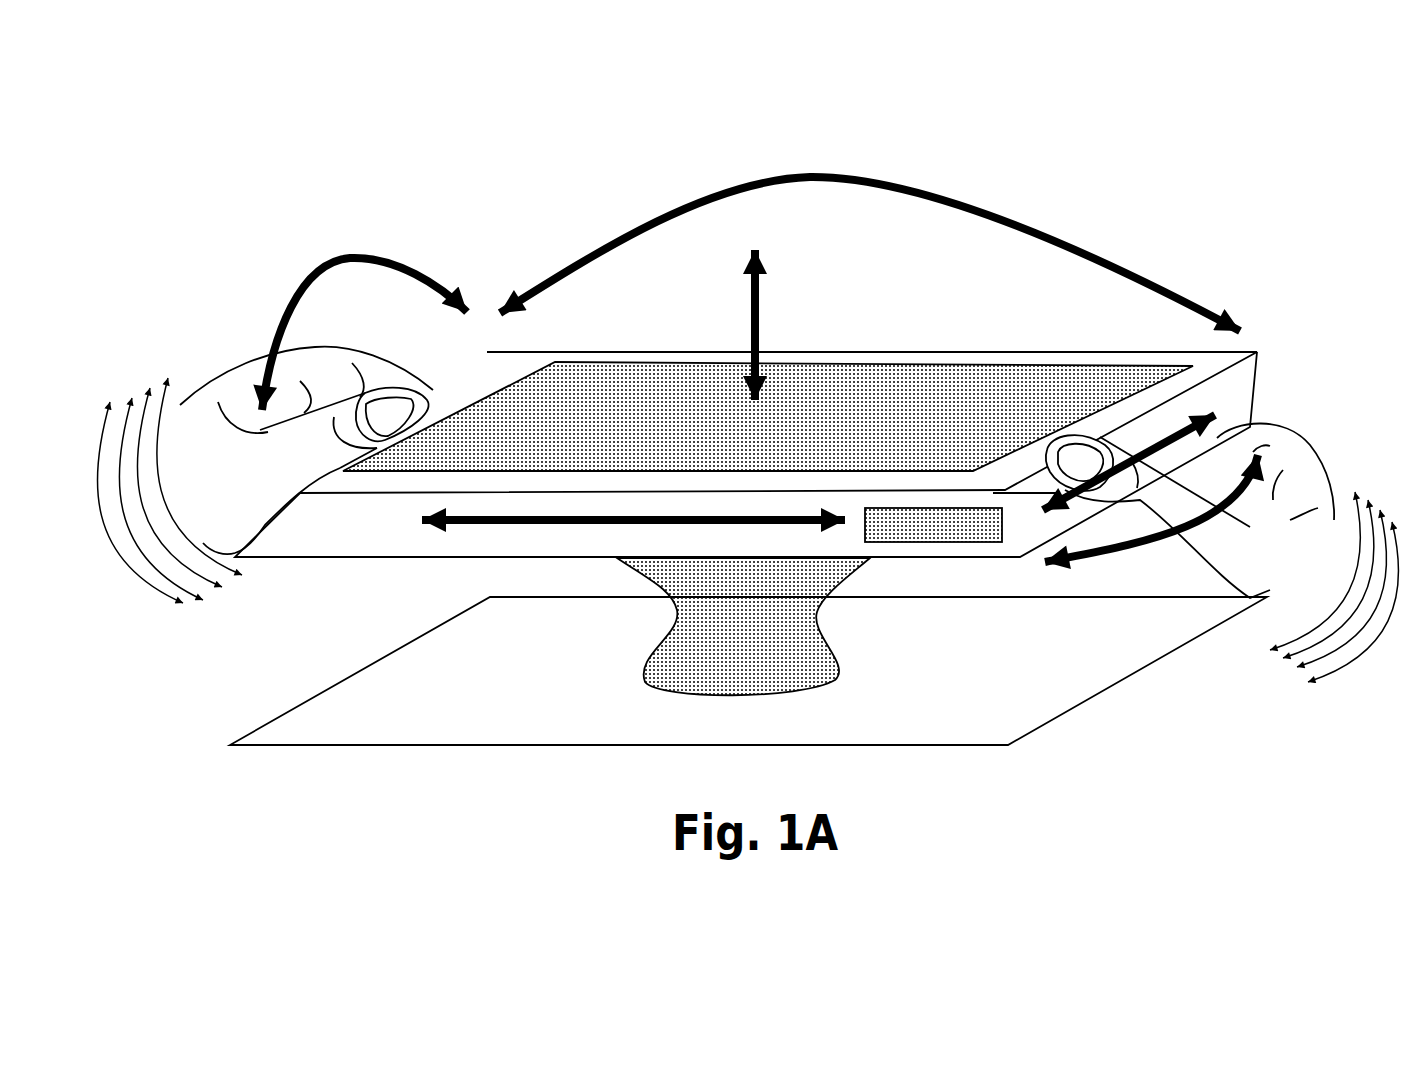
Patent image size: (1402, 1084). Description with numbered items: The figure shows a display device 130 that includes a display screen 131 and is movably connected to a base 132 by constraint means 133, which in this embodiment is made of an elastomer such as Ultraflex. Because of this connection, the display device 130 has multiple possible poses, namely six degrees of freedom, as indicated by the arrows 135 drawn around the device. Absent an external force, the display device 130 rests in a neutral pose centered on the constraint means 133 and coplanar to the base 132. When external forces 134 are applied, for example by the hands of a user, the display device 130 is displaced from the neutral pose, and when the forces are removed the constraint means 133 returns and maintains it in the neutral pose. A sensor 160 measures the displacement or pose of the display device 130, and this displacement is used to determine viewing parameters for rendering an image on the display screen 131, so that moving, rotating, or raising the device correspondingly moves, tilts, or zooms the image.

The display device 130 is at (1253, 404).
The display screen 131 is at (867, 402).
The base 132 is at (1005, 737).
The constraint means 133 is at (790, 580).
The external forces 134 is at (178, 365).
The arrows 135 is at (893, 187).
The sensor 160 is at (902, 545).